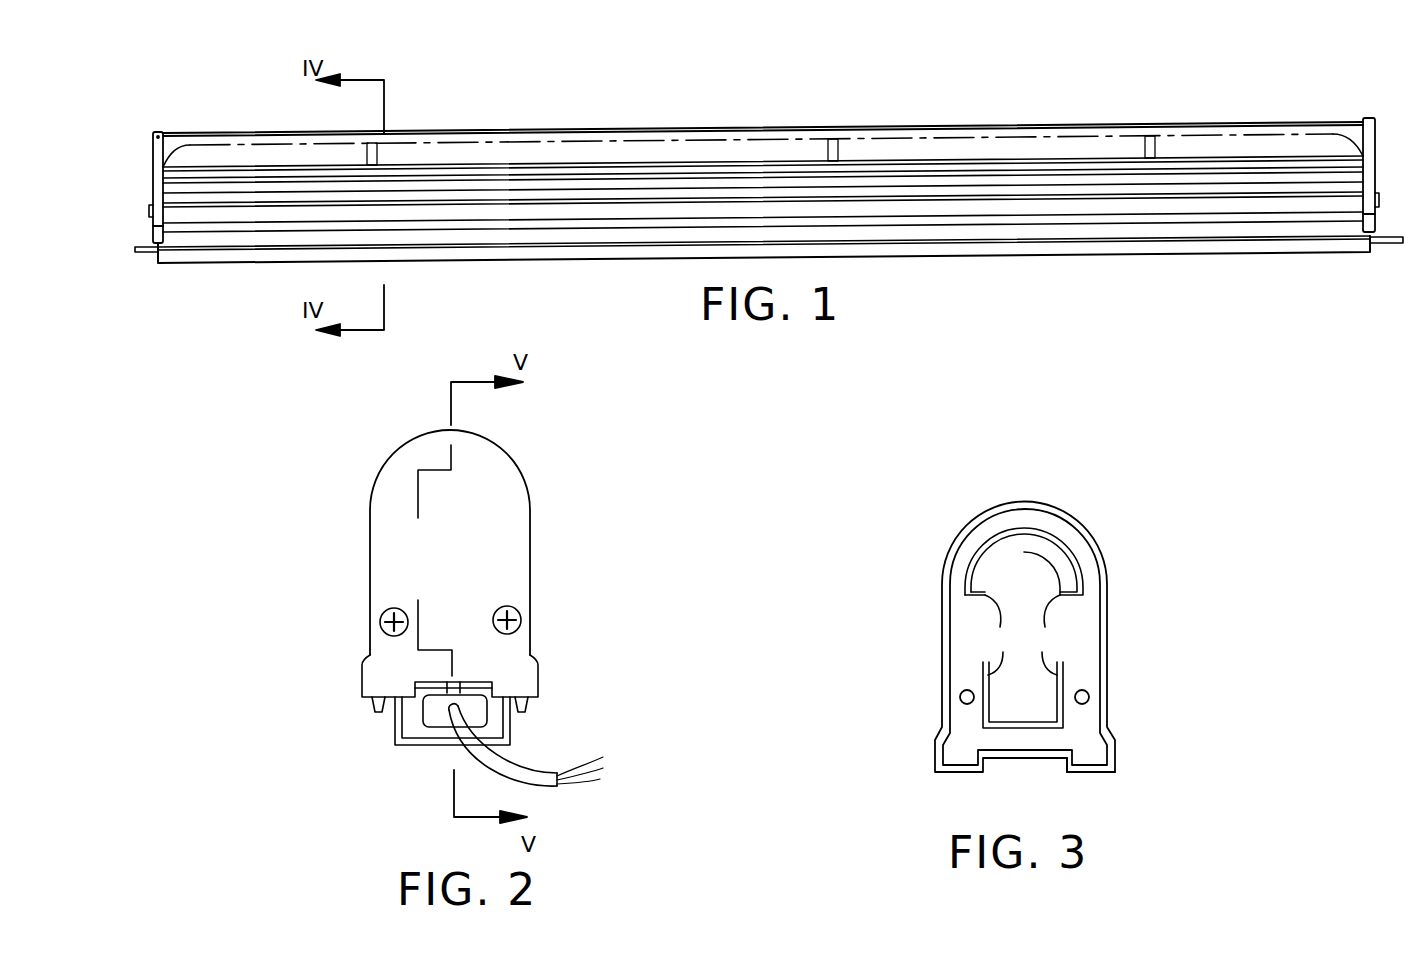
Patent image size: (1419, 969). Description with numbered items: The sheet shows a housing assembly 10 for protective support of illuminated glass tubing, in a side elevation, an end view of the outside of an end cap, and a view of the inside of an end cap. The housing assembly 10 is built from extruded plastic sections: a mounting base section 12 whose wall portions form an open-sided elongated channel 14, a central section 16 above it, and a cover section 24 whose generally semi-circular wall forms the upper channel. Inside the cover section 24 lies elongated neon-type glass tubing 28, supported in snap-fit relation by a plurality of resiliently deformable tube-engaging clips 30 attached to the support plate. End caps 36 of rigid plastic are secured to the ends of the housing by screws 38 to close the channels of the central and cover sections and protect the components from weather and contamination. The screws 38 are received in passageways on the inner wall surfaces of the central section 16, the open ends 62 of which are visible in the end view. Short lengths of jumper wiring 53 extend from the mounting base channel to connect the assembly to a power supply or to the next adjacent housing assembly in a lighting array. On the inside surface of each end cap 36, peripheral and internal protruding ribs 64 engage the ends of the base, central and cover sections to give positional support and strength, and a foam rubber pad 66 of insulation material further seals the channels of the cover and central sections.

In FIG. 1, the housing assembly 10 is at (968, 113).
In FIG. 2, the housing assembly 10 is at (552, 495).
In FIG. 1, the mounting base section 12 is at (227, 264).
In FIG. 2, the mounting base section 12 is at (422, 745).
In FIG. 1, the elongated channel 14 is at (1242, 253).
In FIG. 1, the central section 16 is at (1133, 210).
In FIG. 1, the cover section 24 is at (1038, 121).
In FIG. 1, the glass tubing 28 is at (190, 135).
In FIG. 1, the tube-engaging clips 30 is at (378, 155).
In FIG. 1, the end caps 36 is at (157, 132).
In FIG. 2, the end caps 36 is at (507, 555).
In FIG. 3, the end caps 36 is at (1108, 611).
In FIG. 1, the screws 38 is at (149, 210).
In FIG. 2, the screws 38 is at (382, 612).
In FIG. 1, the jumper wiring 53 is at (142, 256).
In FIG. 3, the open ends of passageways 62 is at (1060, 512).
In FIG. 3, the internal protruding ribs 64 is at (1023, 661).
In FIG. 3, the foam rubber pad 66 is at (1088, 760).